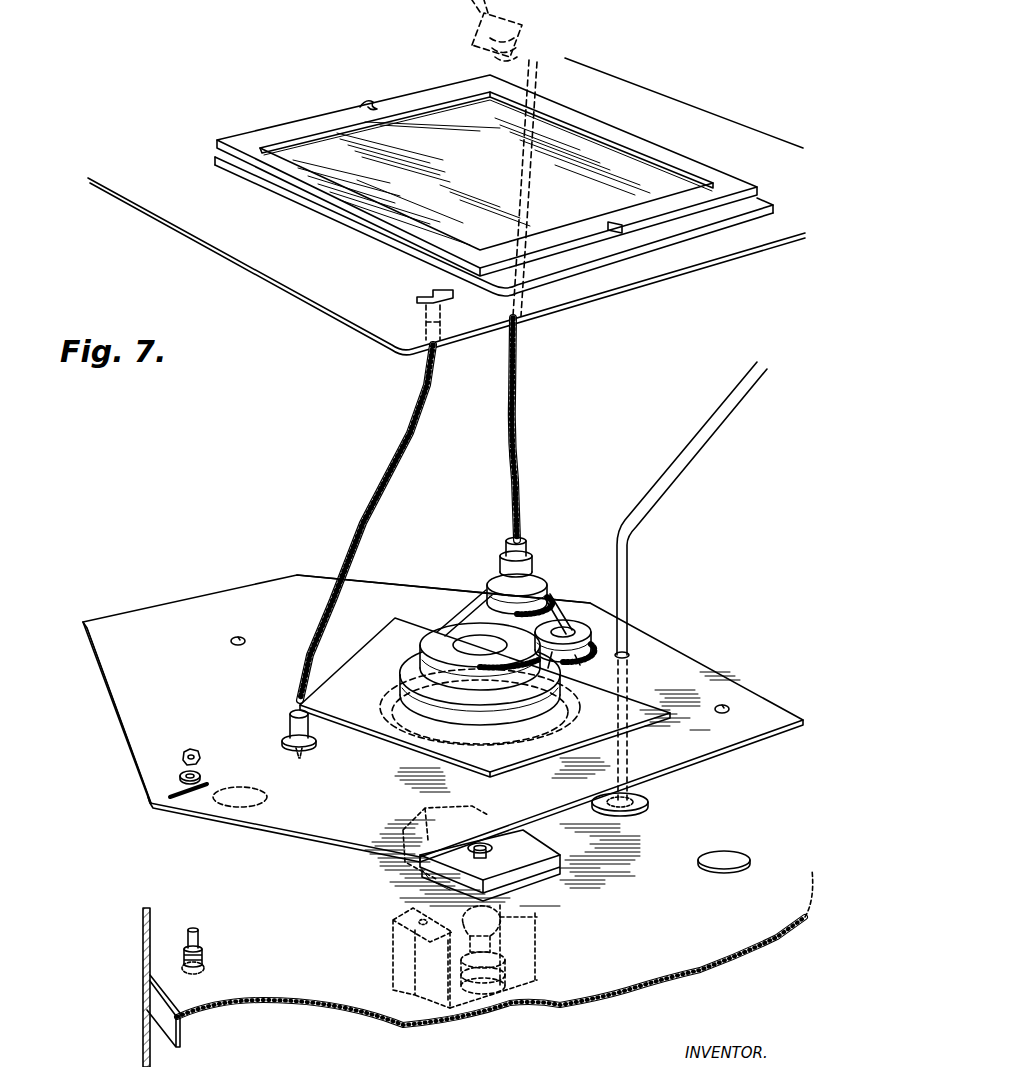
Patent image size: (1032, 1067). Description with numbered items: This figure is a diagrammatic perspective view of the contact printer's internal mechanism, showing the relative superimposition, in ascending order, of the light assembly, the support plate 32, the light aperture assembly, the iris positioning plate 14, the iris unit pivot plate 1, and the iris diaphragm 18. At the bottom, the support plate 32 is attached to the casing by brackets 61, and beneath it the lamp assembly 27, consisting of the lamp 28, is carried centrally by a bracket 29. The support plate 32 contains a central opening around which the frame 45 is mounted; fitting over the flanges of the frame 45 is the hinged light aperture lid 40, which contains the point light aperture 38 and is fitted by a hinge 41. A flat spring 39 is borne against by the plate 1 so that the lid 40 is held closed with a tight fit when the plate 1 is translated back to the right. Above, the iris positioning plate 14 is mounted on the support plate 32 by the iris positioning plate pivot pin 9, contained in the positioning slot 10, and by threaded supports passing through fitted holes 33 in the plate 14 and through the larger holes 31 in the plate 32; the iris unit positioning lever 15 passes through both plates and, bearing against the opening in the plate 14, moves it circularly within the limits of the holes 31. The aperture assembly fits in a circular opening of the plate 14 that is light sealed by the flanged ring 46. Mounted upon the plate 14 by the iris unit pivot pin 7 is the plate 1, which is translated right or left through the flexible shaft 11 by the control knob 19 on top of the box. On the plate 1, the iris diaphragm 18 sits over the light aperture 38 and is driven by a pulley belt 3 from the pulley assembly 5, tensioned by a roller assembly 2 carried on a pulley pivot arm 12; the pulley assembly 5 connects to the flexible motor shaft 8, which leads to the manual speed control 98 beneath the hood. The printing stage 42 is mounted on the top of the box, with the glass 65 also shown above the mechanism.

The iris unit pivot plate 1 is at (616, 692).
The roller assembly 2 is at (578, 618).
The pulley belt 3 is at (462, 608).
The pulley assembly 5 is at (532, 570).
The iris unit pivot pin 7 is at (306, 760).
The flexible motor shaft 8 is at (520, 488).
The iris positioning plate pivot pin 9 is at (200, 945).
The positioning slot 10 is at (208, 787).
The flexible shaft 11 is at (322, 640).
The pulley pivot arm 12 is at (584, 668).
The iris positioning plate 14 is at (706, 680).
The iris unit positioning lever 15 is at (628, 560).
The iris diaphragm 18 is at (440, 635).
The control knob 19 is at (416, 296).
The lamp assembly 27 is at (511, 955).
The lamp 28 is at (538, 920).
The bracket 29 is at (505, 968).
The holes 31 is at (262, 790).
The support plate 32 is at (267, 1007).
The fitted hole 33 is at (246, 640).
The light aperture 38 is at (478, 843).
The flat spring 39 is at (432, 880).
The light aperture lid 40 is at (505, 833).
The hinge 41 is at (405, 826).
The printing stage 42 is at (404, 259).
The frame 45 is at (554, 879).
The flanged ring 46 is at (386, 730).
The brackets 61 is at (180, 1036).
The glass 65 is at (378, 184).
The manual speed control 98 is at (471, 16).